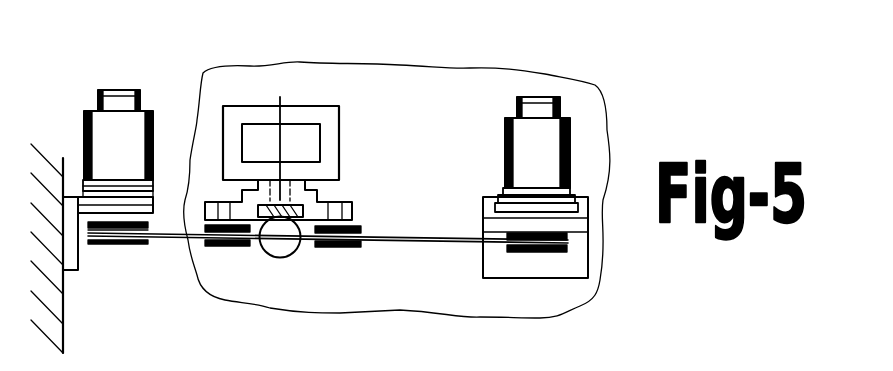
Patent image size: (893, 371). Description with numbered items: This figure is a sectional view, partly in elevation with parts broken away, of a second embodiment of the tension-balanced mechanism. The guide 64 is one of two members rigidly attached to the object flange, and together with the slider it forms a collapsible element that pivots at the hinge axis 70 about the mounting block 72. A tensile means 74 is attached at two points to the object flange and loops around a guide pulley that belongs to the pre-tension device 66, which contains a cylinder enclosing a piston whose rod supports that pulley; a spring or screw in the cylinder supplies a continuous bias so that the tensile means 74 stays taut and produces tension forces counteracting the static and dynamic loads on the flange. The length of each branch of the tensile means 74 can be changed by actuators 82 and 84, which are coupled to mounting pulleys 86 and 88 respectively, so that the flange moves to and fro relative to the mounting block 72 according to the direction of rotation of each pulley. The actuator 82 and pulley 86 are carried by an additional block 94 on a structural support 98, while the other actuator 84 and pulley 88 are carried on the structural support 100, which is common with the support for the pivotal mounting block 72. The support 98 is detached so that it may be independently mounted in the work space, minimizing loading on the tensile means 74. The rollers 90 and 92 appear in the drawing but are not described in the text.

The guide 64 is at (302, 188).
The pre-tension device 66 is at (288, 259).
The hinge axis 70 is at (282, 147).
The mounting block 72 is at (333, 143).
The tensile means 74 is at (165, 231).
The actuator 82 is at (148, 110).
The actuator 84 is at (566, 122).
The mounting pulley 86 is at (136, 244).
The mounting pulley 88 is at (541, 253).
The roller 90 is at (233, 250).
The roller 92 is at (347, 250).
The block 94 is at (70, 196).
The structural support 98 is at (47, 175).
The structural support 100 is at (598, 305).